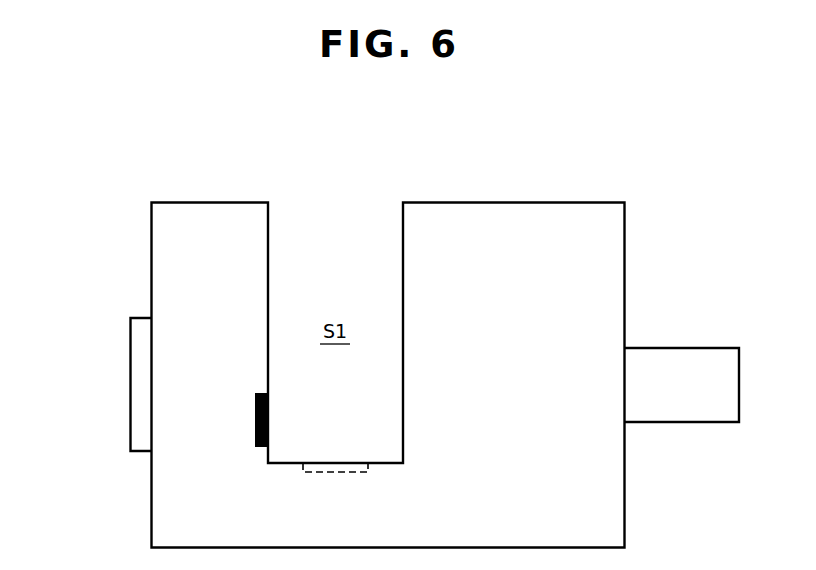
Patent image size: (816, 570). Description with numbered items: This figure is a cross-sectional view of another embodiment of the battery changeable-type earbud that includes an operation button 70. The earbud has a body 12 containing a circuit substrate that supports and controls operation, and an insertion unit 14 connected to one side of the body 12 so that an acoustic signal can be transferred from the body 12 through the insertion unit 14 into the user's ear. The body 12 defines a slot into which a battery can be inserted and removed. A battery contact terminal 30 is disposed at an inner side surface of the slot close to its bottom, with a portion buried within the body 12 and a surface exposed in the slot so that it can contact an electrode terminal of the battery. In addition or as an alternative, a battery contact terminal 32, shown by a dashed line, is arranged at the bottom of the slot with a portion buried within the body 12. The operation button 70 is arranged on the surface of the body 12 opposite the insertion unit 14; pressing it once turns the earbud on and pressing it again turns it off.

The body 12 is at (513, 222).
The insertion unit 14 is at (680, 355).
The operation button 70 is at (137, 385).
The battery contact terminal 30 is at (255, 420).
The battery contact terminal 32 is at (335, 474).